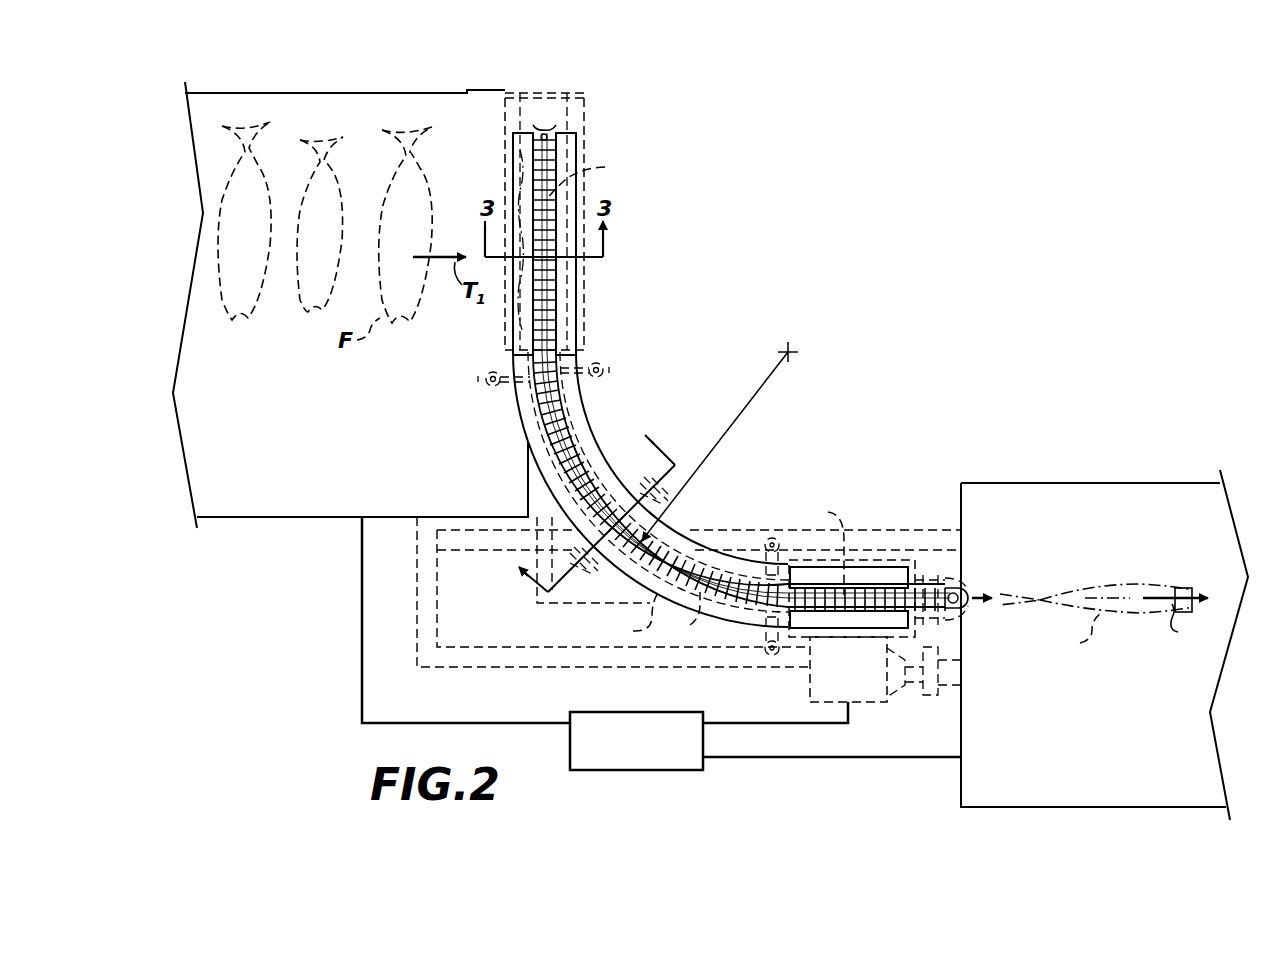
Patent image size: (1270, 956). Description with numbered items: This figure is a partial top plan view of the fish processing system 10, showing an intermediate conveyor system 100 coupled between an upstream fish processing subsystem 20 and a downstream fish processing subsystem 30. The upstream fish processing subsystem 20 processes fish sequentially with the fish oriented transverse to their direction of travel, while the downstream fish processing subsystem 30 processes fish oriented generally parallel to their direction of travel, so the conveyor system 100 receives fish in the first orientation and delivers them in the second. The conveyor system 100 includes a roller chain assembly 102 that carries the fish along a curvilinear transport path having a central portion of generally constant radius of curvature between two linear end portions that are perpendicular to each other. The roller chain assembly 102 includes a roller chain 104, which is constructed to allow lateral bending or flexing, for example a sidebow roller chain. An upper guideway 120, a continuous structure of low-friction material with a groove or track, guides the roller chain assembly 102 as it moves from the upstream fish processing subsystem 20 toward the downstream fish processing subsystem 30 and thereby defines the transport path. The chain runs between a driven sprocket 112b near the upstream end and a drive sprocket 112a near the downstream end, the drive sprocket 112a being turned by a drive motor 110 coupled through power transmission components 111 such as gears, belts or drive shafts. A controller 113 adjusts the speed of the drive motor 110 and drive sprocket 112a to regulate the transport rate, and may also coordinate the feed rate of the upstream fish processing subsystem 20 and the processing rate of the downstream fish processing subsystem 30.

The fish processing system 10 is at (1006, 172).
The upstream fish processing subsystem 20 is at (459, 80).
The downstream fish processing subsystem 30 is at (1024, 468).
The intermediate conveyor system 100 is at (722, 398).
The roller chain assembly 102 is at (728, 555).
The roller chain 104 is at (566, 428).
The drive motor 110 is at (820, 680).
The power transmission components 111 is at (960, 624).
The drive sprocket 112a is at (932, 560).
The driven sprocket 112b is at (596, 146).
The controller 113 is at (654, 770).
The upper guideway 120 is at (572, 401).